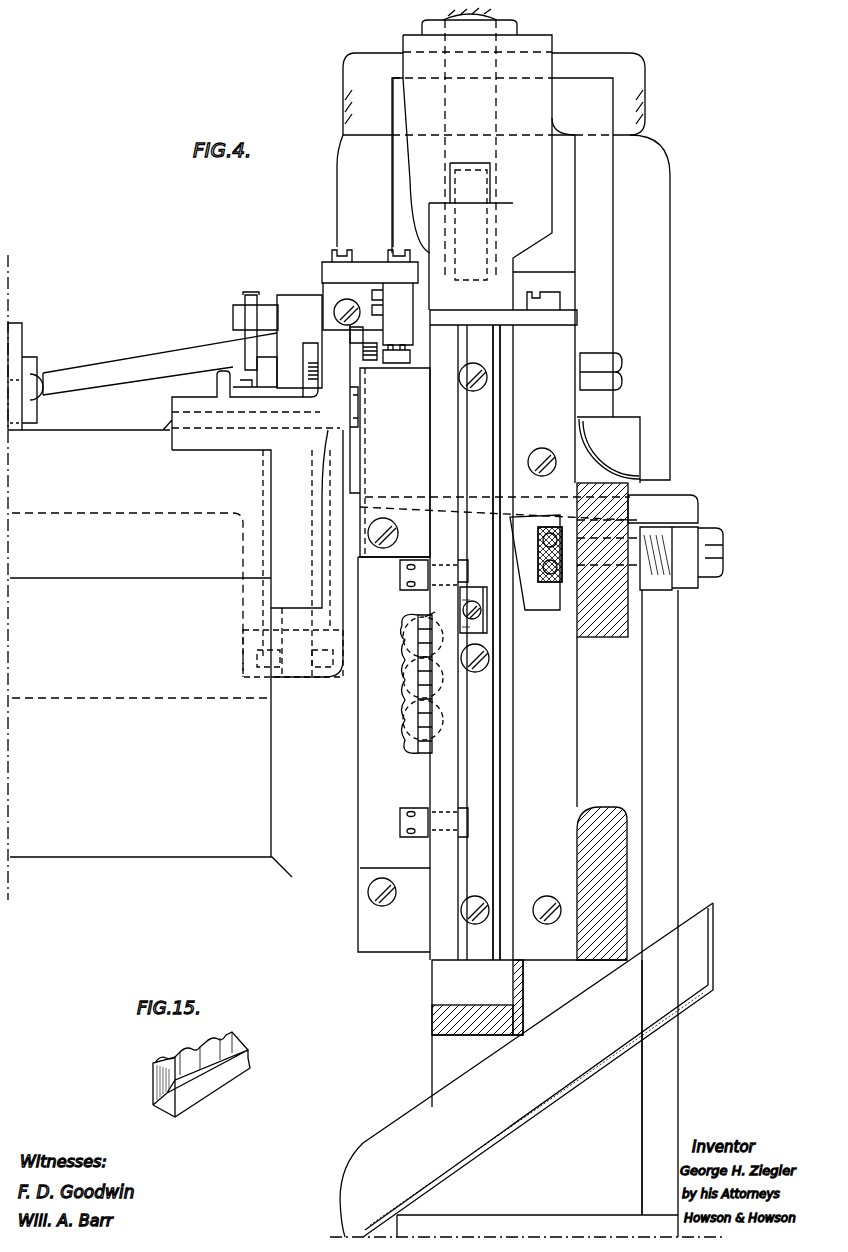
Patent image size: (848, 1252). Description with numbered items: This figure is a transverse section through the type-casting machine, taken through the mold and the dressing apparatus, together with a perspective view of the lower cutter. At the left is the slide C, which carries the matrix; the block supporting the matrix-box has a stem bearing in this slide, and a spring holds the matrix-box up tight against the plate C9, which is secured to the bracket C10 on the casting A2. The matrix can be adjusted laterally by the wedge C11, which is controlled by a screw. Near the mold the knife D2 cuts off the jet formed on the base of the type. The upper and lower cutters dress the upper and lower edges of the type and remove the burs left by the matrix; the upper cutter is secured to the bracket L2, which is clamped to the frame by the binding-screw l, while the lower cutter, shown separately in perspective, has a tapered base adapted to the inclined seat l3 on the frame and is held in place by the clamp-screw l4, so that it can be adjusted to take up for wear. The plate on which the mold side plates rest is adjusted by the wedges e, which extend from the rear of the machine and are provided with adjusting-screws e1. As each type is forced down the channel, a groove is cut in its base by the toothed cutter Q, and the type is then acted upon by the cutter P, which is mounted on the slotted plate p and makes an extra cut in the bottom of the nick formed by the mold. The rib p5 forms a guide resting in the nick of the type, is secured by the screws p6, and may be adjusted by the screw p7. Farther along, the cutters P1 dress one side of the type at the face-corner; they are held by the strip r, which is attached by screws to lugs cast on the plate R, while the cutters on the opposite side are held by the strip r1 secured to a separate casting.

The slide C is at (22, 338).
The plate C9 is at (370, 266).
The bracket C10 is at (182, 614).
The wedge C11 is at (277, 340).
The knife D2 is at (542, 298).
The bracket L2 is at (318, 380).
The binding-screw l is at (350, 400).
The inclined seat l3 is at (390, 441).
The clamp-screw l4 is at (386, 348).
The casting A2 is at (151, 695).
The plate R is at (401, 735).
The cutter P is at (473, 601).
The cutters P1 is at (408, 684).
The plate p is at (469, 612).
The rib p5 is at (520, 710).
The screws p6 is at (478, 888).
The screw p7 is at (392, 828).
The cutter Q is at (536, 568).
The strip r is at (405, 724).
The strip r1 is at (435, 611).
The wedges e is at (663, 509).
The adjusting-screws e1 is at (681, 882).